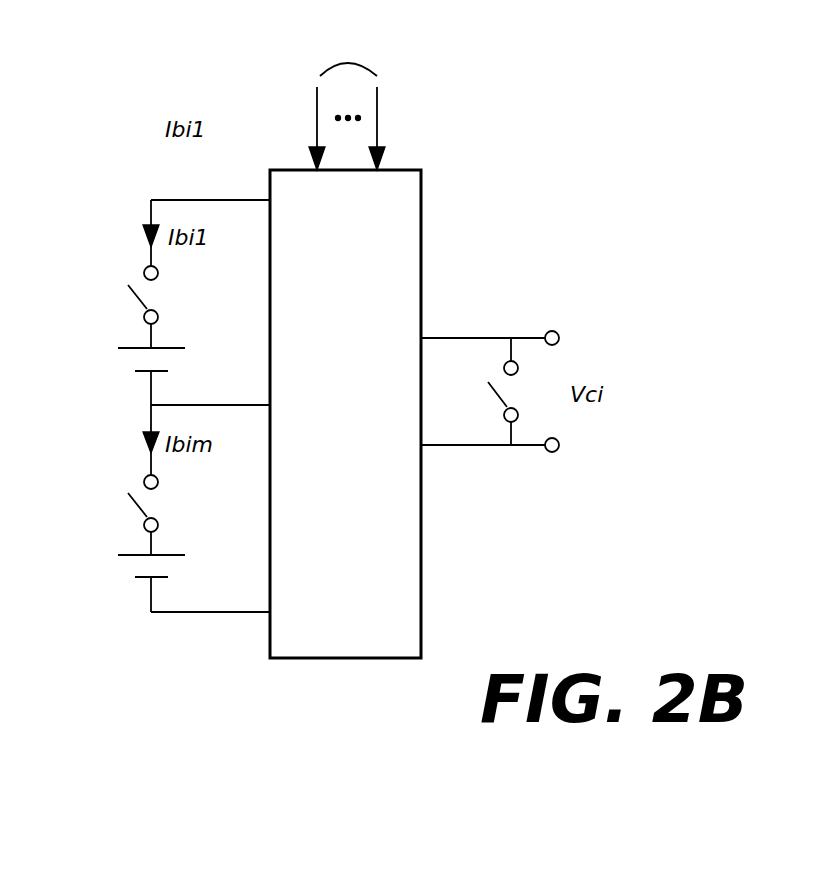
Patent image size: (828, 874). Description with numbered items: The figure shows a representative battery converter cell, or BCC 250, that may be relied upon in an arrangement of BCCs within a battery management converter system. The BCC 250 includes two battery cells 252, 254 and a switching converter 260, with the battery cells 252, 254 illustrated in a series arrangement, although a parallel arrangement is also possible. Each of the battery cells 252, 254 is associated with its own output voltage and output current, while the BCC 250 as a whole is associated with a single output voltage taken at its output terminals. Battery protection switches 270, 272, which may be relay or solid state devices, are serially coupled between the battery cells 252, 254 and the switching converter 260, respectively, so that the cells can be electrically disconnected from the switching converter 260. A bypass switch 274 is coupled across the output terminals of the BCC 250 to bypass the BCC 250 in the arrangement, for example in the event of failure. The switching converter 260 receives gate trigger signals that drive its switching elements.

The battery converter cell 250 is at (64, 181).
The battery cell 252 is at (140, 376).
The battery cell 254 is at (140, 582).
The switching converter 260 is at (421, 202).
The battery protection switch 270 is at (136, 298).
The battery protection switch 272 is at (136, 506).
The bypass switch 274 is at (497, 396).